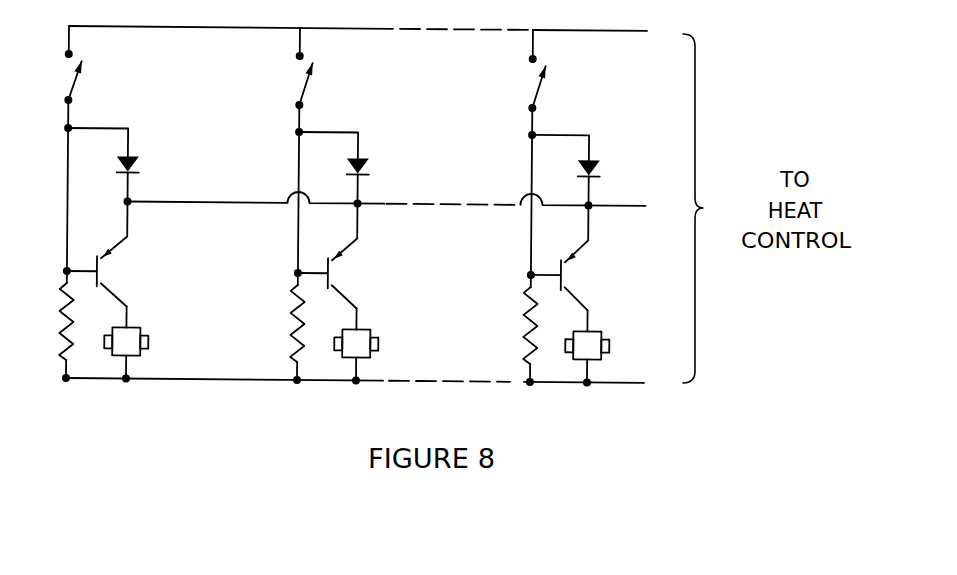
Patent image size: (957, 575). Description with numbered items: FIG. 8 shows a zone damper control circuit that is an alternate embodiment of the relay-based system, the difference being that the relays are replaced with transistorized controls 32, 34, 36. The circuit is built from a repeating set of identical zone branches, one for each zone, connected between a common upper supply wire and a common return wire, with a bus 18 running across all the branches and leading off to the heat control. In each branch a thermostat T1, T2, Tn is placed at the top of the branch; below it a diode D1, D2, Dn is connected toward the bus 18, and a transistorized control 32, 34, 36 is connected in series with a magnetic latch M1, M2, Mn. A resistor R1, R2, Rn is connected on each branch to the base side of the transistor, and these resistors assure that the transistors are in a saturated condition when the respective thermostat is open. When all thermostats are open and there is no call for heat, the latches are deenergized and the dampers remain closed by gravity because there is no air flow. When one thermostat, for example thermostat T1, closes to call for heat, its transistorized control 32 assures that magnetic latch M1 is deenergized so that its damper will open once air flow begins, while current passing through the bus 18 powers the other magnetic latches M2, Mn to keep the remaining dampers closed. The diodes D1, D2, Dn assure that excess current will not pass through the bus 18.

The bus 18 is at (633, 202).
The transistorized control 32 is at (110, 285).
The transistorized control 34 is at (345, 286).
The transistorized control 36 is at (579, 288).
The thermostat T1 is at (89, 77).
The thermostat T2 is at (319, 80).
The thermostat Tn is at (552, 83).
The diode D1 is at (120, 165).
The diode D2 is at (349, 168).
The diode Dn is at (582, 170).
The resistor R1 is at (45, 321).
The resistor R2 is at (277, 323).
The resistor Rn is at (508, 325).
The magnetic latch M1 is at (142, 342).
The magnetic latch M2 is at (372, 344).
The magnetic latch Mn is at (604, 346).